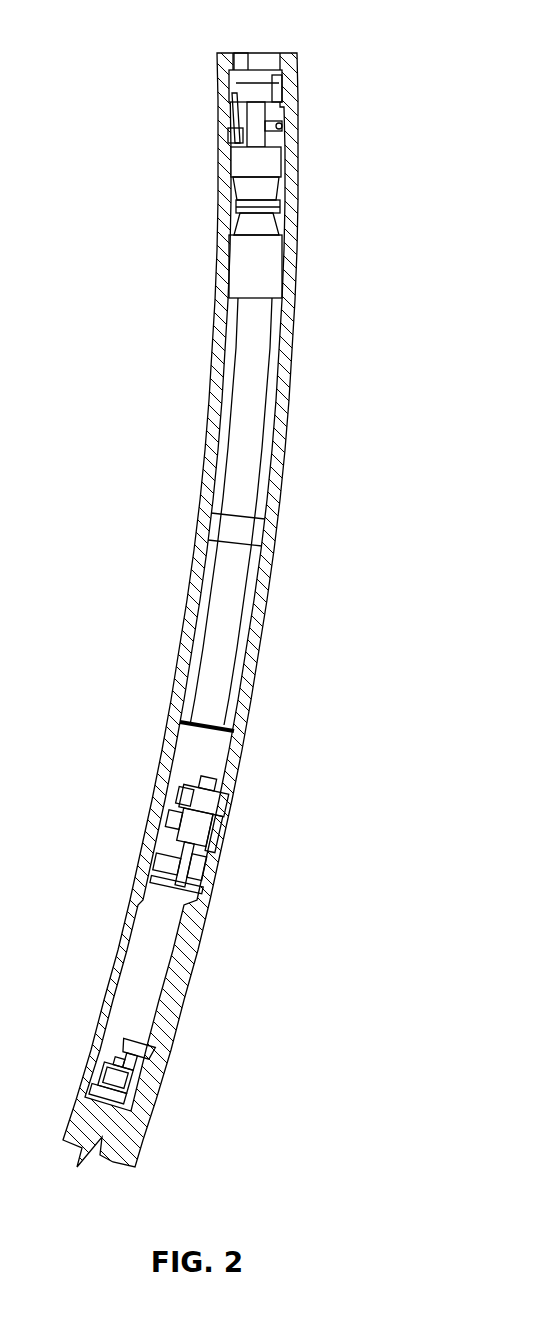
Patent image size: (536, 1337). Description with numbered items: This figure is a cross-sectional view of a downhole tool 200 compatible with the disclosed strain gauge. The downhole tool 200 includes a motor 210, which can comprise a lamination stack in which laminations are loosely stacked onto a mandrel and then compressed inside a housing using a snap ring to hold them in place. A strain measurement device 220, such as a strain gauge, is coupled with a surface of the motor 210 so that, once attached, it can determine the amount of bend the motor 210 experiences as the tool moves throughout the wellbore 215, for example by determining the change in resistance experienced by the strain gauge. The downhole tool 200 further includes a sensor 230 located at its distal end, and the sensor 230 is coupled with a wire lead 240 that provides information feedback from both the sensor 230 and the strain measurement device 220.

The downhole tool 200 is at (345, 62).
The motor 210 is at (255, 350).
The wellbore 215 is at (207, 443).
The strain measurement device 220 is at (265, 528).
The sensor 230 is at (165, 1020).
The wire lead 240 is at (185, 913).